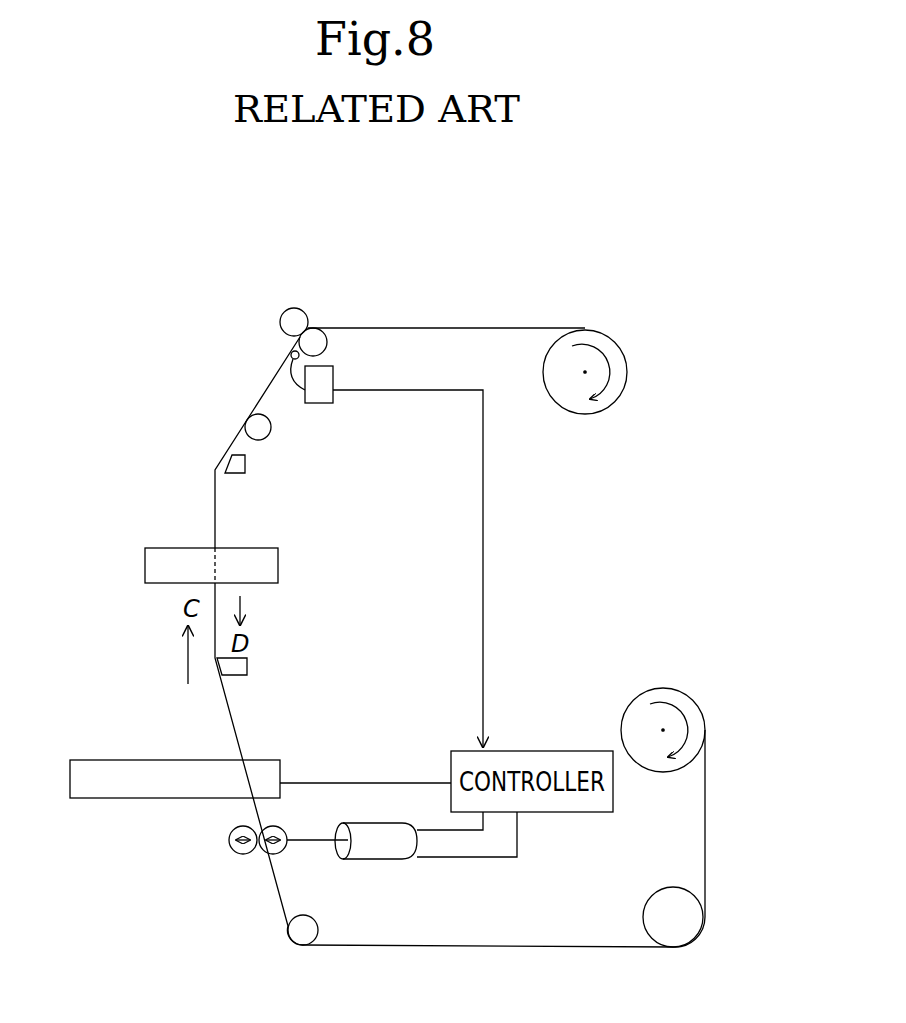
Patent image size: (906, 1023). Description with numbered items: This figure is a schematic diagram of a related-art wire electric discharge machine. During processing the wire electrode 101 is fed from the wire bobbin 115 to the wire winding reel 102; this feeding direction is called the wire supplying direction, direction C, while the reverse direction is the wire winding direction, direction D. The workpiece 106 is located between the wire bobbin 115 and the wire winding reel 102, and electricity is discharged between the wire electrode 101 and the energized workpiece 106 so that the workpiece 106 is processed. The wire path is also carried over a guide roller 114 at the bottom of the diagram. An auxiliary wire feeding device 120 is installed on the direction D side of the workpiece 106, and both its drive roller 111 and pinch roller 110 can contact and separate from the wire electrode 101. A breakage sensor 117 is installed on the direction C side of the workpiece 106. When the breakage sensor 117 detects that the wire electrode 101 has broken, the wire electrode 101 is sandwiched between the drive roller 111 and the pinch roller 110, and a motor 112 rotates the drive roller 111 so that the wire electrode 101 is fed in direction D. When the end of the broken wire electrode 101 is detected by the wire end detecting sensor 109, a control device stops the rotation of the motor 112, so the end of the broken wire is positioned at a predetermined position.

The wire electrode 101 is at (222, 702).
The wire winding reel 102 is at (620, 360).
The workpiece 106 is at (253, 558).
The wire end detecting sensor 109 is at (273, 760).
The pinch roller 110 is at (240, 853).
The drive roller 111 is at (280, 826).
The motor 112 is at (385, 847).
The guide roller 114 is at (687, 938).
The wire bobbin 115 is at (697, 723).
The breakage sensor 117 is at (320, 393).
The auxiliary wire feeding device 120 is at (360, 907).